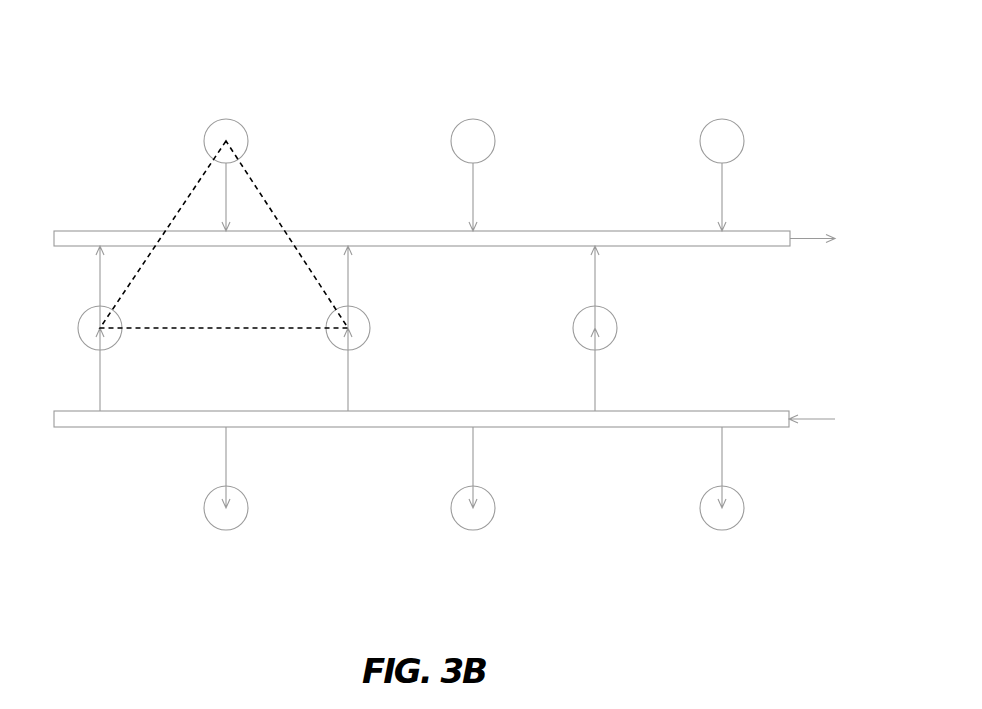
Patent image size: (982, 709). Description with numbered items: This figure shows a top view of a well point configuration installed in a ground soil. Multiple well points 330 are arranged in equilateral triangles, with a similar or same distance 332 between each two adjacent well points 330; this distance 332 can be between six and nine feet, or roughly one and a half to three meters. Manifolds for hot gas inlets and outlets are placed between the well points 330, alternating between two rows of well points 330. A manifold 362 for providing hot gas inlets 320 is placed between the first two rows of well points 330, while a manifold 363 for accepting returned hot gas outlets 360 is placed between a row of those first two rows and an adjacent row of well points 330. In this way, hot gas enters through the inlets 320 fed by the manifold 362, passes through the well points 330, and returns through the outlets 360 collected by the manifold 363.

The hot gas inlets 320 is at (595, 388).
The well points 330 is at (218, 132).
The distance between adjacent well points 332 is at (175, 215).
The returned hot gas outlets 360 is at (722, 200).
The manifold for hot gas inlets 362 is at (687, 419).
The manifold for returned hot gas outlets 363 is at (566, 238).